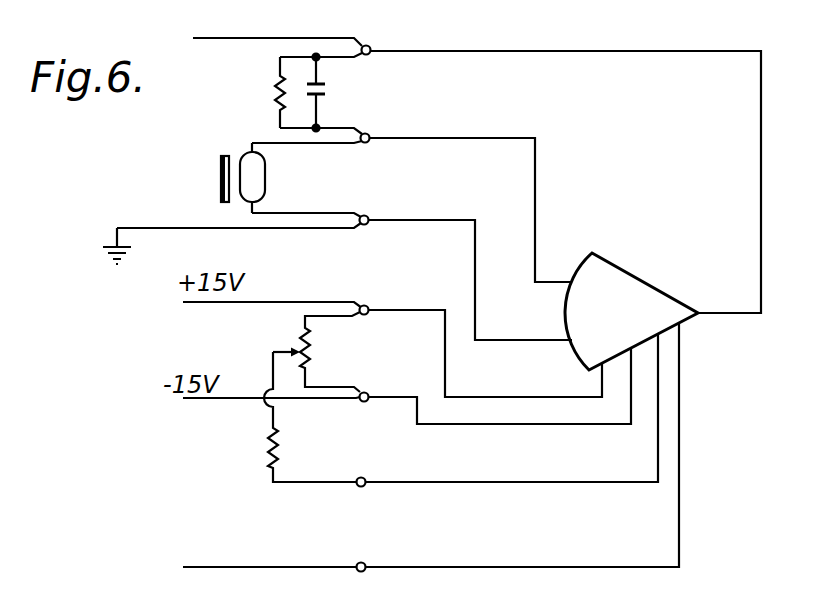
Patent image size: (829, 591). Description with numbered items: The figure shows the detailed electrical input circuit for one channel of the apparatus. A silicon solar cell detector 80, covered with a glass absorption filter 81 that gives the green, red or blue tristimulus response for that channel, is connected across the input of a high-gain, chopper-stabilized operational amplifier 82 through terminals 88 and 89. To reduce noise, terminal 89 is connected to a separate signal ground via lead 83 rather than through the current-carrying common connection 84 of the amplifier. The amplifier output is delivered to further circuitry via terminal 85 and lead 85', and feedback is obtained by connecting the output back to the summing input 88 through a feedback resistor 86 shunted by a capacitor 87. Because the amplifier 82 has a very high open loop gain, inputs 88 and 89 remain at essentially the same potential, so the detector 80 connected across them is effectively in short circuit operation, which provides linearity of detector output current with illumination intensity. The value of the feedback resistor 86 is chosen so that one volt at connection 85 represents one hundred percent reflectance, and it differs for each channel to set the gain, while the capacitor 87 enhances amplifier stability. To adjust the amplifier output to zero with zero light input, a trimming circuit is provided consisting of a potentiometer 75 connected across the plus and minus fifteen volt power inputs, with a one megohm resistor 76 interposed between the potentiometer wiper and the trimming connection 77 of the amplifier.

The potentiometer 75 is at (312, 350).
The resistor 76 is at (266, 437).
The trimming connection 77 is at (358, 487).
The silicon solar cell detector 80 is at (266, 173).
The glass absorption filter 81 is at (221, 178).
The amplifier 82 is at (640, 326).
The lead 83 is at (249, 229).
The common connection 84 is at (365, 563).
The terminal 85 is at (520, 156).
The lead 85' is at (277, 24).
The feedback resistor 86 is at (275, 86).
The capacitor 87 is at (327, 89).
The terminal 88 is at (368, 134).
The terminal 89 is at (367, 215).